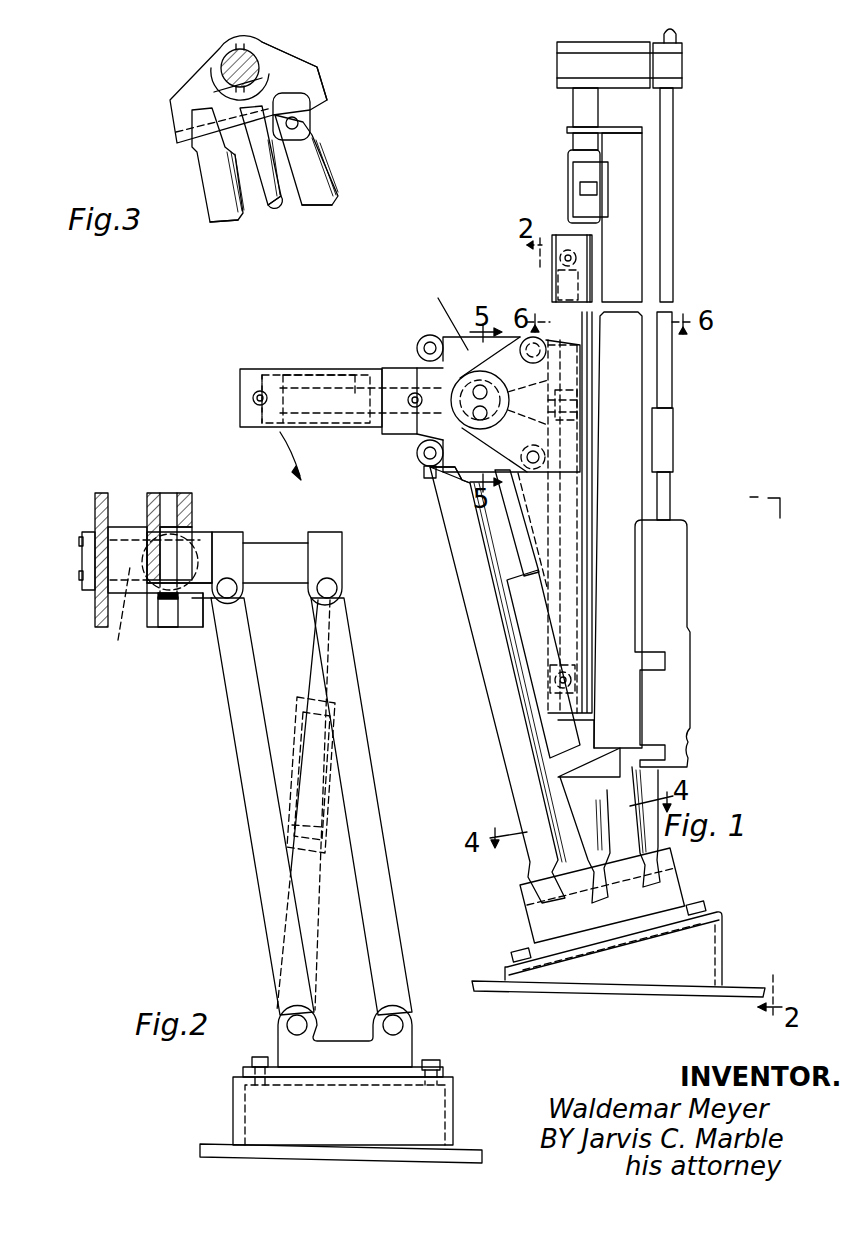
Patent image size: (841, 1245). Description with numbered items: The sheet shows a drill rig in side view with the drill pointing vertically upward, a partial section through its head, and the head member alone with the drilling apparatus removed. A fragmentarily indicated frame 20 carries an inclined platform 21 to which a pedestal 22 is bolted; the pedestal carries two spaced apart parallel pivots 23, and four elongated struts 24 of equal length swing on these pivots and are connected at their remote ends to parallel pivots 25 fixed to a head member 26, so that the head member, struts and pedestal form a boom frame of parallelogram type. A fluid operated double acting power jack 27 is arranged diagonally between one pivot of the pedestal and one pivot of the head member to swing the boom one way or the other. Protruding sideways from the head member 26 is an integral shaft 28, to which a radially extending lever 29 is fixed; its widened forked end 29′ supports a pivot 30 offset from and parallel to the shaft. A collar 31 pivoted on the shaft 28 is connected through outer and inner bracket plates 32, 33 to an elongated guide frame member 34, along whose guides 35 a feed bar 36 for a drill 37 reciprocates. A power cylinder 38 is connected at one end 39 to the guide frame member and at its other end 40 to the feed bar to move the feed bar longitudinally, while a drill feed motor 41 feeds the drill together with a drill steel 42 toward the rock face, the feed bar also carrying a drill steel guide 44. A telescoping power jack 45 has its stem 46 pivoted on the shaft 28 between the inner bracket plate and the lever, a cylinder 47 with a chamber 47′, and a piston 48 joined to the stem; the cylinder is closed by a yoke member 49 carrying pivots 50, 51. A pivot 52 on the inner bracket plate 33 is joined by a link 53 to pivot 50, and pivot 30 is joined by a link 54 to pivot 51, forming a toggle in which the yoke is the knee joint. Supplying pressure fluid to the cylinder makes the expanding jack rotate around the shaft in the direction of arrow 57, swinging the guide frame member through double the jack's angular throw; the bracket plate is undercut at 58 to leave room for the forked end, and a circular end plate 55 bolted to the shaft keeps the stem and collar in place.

In FIG. 2, the frame 20 is at (270, 1152).
In FIG. 1, the frame 20 is at (612, 988).
In FIG. 2, the inclined platform 21 is at (447, 1108).
In FIG. 1, the inclined platform 21 is at (653, 935).
In FIG. 2, the pedestal 22 is at (398, 1055).
In FIG. 1, the pedestal 22 is at (667, 892).
In FIG. 2, the pivots 23 is at (393, 1028).
In FIG. 1, the pivots 23 is at (537, 898).
In FIG. 3, the struts 24 is at (315, 190).
In FIG. 2, the struts 24 is at (377, 920).
In FIG. 1, the struts 24 is at (635, 840).
In FIG. 3, the pivots 25 is at (322, 92).
In FIG. 2, the pivots 25 is at (232, 590).
In FIG. 3, the head member 26 is at (183, 98).
In FIG. 2, the head member 26 is at (262, 557).
In FIG. 3, the power jack 27 is at (272, 203).
In FIG. 2, the power jack 27 is at (303, 858).
In FIG. 1, the power jack 27 is at (527, 605).
In FIG. 3, the shaft 28 is at (232, 58).
In FIG. 2, the shaft 28 is at (113, 618).
In FIG. 1, the shaft 28 is at (450, 385).
In FIG. 3, the lever 29 is at (262, 62).
In FIG. 2, the lever 29 is at (150, 582).
In FIG. 1, the lever 29 is at (515, 388).
In FIG. 3, the forked end 29′ is at (295, 100).
In FIG. 2, the forked end 29′ is at (192, 623).
In FIG. 1, the forked end 29′ is at (552, 442).
In FIG. 3, the pivot 30 is at (299, 123).
In FIG. 2, the pivot 30 is at (197, 613).
In FIG. 1, the pivot 30 is at (500, 505).
In FIG. 2, the collar 31 is at (125, 530).
In FIG. 2, the bracket plate 32 is at (95, 517).
In FIG. 1, the bracket plate 32 is at (483, 355).
In FIG. 2, the bracket plate 33 is at (147, 518).
In FIG. 1, the guide frame member 34 is at (563, 547).
In FIG. 1, the guides 35 is at (592, 277).
In FIG. 1, the feed bar 36 is at (620, 507).
In FIG. 1, the drill 37 is at (677, 690).
In FIG. 1, the power cylinder 38 is at (553, 392).
In FIG. 1, the end of power cylinder 39 is at (555, 233).
In FIG. 1, the end of power cylinder 40 is at (550, 680).
In FIG. 1, the drill feed motor 41 is at (558, 775).
In FIG. 1, the drill steel 42 is at (665, 378).
In FIG. 1, the drill steel guide 44 is at (675, 72).
In FIG. 1, the power jack 45 is at (290, 372).
In FIG. 2, the stem 46 is at (198, 533).
In FIG. 1, the stem 46 is at (355, 385).
In FIG. 1, the cylinder 47 is at (333, 417).
In FIG. 1, the chamber 47′ is at (260, 385).
In FIG. 1, the piston 48 is at (262, 383).
In FIG. 1, the yoke member 49 is at (423, 427).
In FIG. 1, the pivot 50 is at (428, 340).
In FIG. 1, the pivot 51 is at (418, 460).
In FIG. 2, the pivot 52 is at (175, 548).
In FIG. 1, the pivot 52 is at (525, 335).
In FIG. 2, the link 53 is at (173, 498).
In FIG. 1, the link 53 is at (440, 311).
In FIG. 2, the link 54 is at (170, 624).
In FIG. 1, the link 54 is at (458, 457).
In FIG. 2, the circular end plate 55 is at (83, 583).
In FIG. 1, the arrow 57 is at (270, 456).
In FIG. 1, the undercut 58 is at (543, 418).